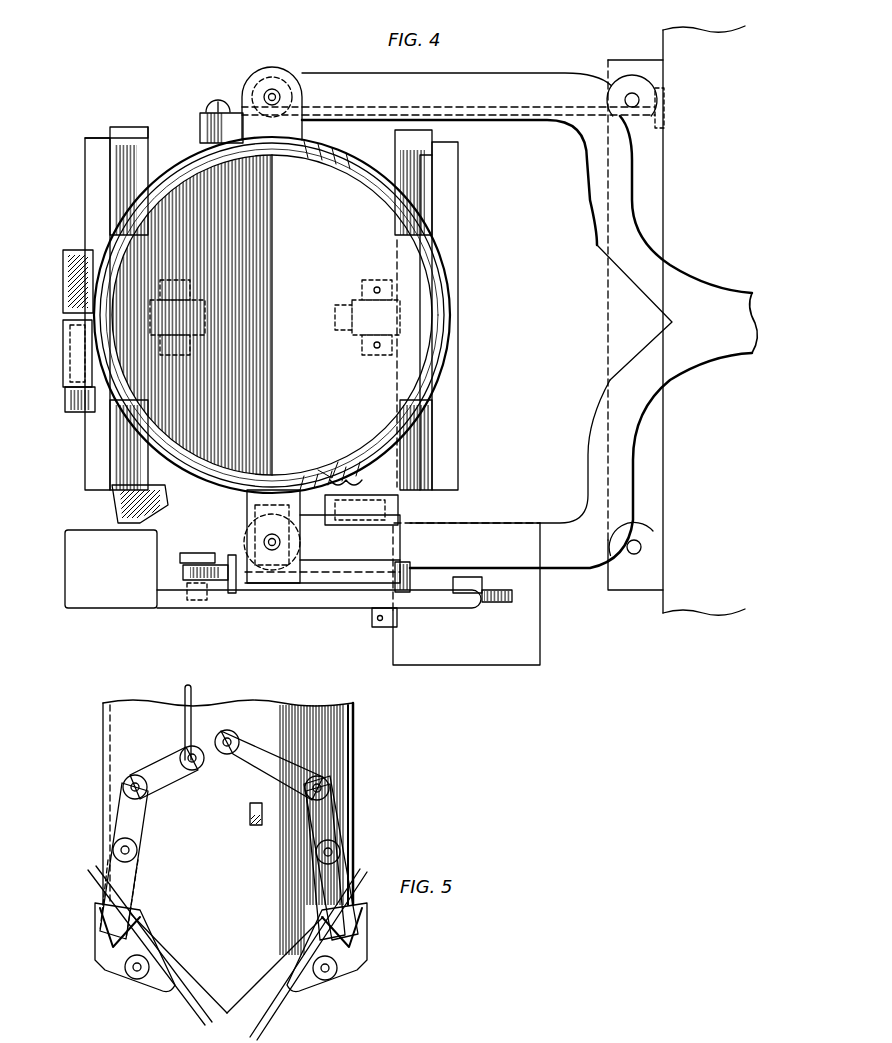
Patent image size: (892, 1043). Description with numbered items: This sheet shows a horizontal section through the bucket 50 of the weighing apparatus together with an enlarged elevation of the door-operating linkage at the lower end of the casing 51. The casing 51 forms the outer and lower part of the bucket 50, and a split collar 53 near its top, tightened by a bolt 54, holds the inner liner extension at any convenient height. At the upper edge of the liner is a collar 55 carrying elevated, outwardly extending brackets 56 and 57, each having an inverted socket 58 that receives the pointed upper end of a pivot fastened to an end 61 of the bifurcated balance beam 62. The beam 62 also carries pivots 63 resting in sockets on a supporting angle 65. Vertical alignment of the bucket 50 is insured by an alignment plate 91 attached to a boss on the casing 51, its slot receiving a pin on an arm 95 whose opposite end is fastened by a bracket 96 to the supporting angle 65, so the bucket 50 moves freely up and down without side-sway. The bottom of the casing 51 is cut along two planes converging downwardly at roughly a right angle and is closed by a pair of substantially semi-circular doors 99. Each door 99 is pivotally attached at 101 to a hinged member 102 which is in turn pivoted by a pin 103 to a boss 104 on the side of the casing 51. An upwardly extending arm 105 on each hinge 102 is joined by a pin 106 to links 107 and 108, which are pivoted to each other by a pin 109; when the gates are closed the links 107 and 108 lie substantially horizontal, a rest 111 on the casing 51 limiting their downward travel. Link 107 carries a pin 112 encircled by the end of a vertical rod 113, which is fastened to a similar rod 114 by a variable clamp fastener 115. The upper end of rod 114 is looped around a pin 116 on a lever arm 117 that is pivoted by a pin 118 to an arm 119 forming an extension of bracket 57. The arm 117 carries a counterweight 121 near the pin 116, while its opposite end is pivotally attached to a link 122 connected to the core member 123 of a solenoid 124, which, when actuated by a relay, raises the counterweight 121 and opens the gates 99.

In FIG. 5, the bucket 50 is at (232, 901).
In FIG. 5, the casing 51 is at (356, 742).
In FIG. 4, the split collar 53 is at (70, 325).
In FIG. 4, the bolt 54 is at (70, 402).
In FIG. 4, the collar 55 is at (440, 325).
In FIG. 4, the bracket 56 is at (280, 74).
In FIG. 4, the bracket 57 is at (300, 540).
In FIG. 4, the inverted socket 58 is at (280, 92).
In FIG. 4, the end of balance beam 61 is at (518, 122).
In FIG. 4, the bifurcated balance beam 62 is at (735, 300).
In FIG. 4, the pivot 63 is at (632, 93).
In FIG. 4, the supporting angle 65 is at (668, 604).
In FIG. 4, the alignment plate 91 is at (243, 106).
In FIG. 4, the arm 95 is at (490, 108).
In FIG. 4, the bracket 96 is at (666, 122).
In FIG. 4, the door 99 is at (252, 254).
In FIG. 5, the door 99 is at (188, 1008).
In FIG. 4, the pivot 101 is at (372, 358).
In FIG. 5, the pivot 101 is at (128, 976).
In FIG. 4, the hinged member 102 is at (452, 178).
In FIG. 5, the hinged member 102 is at (140, 915).
In FIG. 5, the pin 103 is at (122, 850).
In FIG. 4, the boss 104 is at (425, 212).
In FIG. 5, the arm 105 is at (330, 815).
In FIG. 5, the pin 106 is at (324, 786).
In FIG. 4, the link 107 is at (165, 518).
In FIG. 5, the link 107 is at (155, 765).
In FIG. 4, the link 108 is at (340, 520).
In FIG. 5, the link 108 is at (250, 752).
In FIG. 5, the pin 109 is at (238, 728).
In FIG. 4, the rest 111 is at (333, 470).
In FIG. 5, the rest 111 is at (250, 812).
In FIG. 5, the pin 112 is at (192, 770).
In FIG. 4, the rod 113 is at (232, 595).
In FIG. 5, the rod 113 is at (192, 695).
In FIG. 4, the rod 114 is at (183, 572).
In FIG. 4, the variable clamp fastener 115 is at (180, 557).
In FIG. 4, the pin 116 is at (192, 598).
In FIG. 4, the arm 117 is at (256, 598).
In FIG. 4, the pin 118 is at (375, 626).
In FIG. 4, the arm 119 is at (405, 580).
In FIG. 4, the counterweight 121 is at (75, 540).
In FIG. 4, the link 122 is at (480, 580).
In FIG. 4, the core member 123 is at (500, 603).
In FIG. 4, the solenoid 124 is at (455, 655).